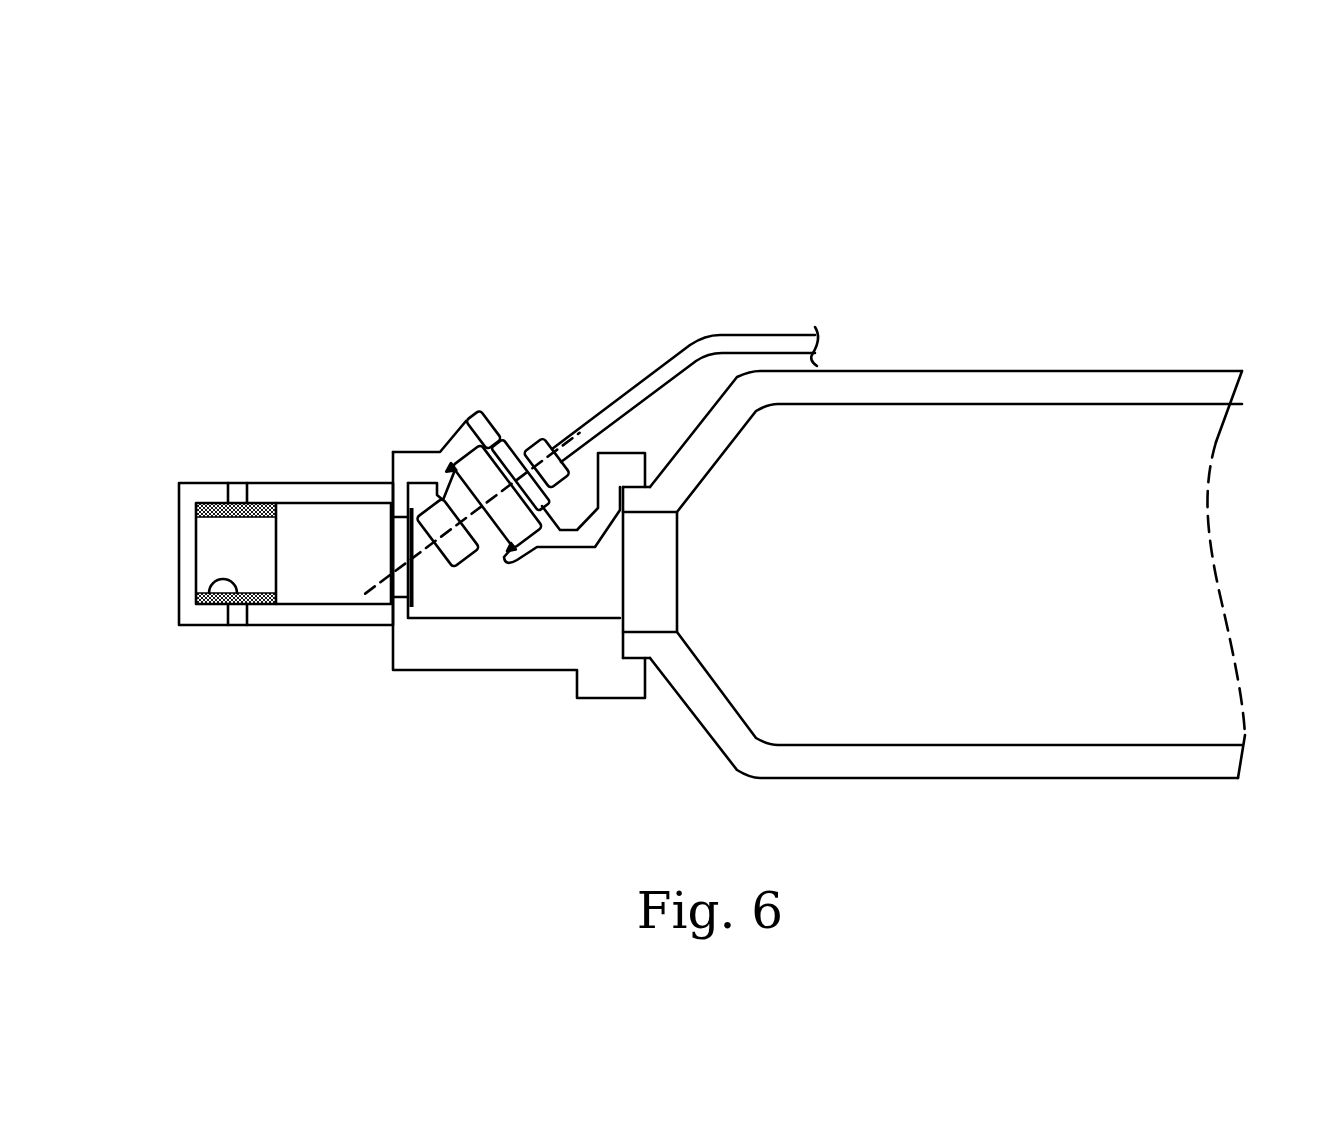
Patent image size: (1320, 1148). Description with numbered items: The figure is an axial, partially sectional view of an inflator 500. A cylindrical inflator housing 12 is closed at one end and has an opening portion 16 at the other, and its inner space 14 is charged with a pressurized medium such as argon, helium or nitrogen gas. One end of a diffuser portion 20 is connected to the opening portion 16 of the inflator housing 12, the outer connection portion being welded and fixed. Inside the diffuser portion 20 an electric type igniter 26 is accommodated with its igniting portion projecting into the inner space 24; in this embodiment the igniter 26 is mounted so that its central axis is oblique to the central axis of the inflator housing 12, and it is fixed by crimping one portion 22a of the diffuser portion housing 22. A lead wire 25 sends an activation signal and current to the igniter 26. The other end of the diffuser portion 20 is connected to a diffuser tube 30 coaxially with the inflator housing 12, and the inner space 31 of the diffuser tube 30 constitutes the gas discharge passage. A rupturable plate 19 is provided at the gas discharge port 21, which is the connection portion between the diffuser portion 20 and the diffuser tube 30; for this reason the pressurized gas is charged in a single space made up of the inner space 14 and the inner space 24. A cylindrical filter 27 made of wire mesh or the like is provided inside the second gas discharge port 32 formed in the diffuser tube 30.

The inflator 500 is at (895, 300).
The inflator housing 12 is at (1035, 388).
The inner space 14 is at (943, 541).
The opening portion 16 is at (653, 512).
The rupturable plate 19 is at (413, 587).
The diffuser portion 20 is at (434, 430).
The gas discharge port 21 is at (400, 543).
The diffuser portion housing 22 is at (460, 653).
The crimped portion of diffuser portion housing 22a is at (513, 438).
The inner space 24 is at (532, 606).
The lead wire 25 is at (683, 360).
The igniter 26 is at (483, 465).
The filter 27 is at (232, 606).
The diffuser tube 30 is at (322, 483).
The inner space 31 is at (342, 566).
The second gas discharge port 32 is at (240, 492).